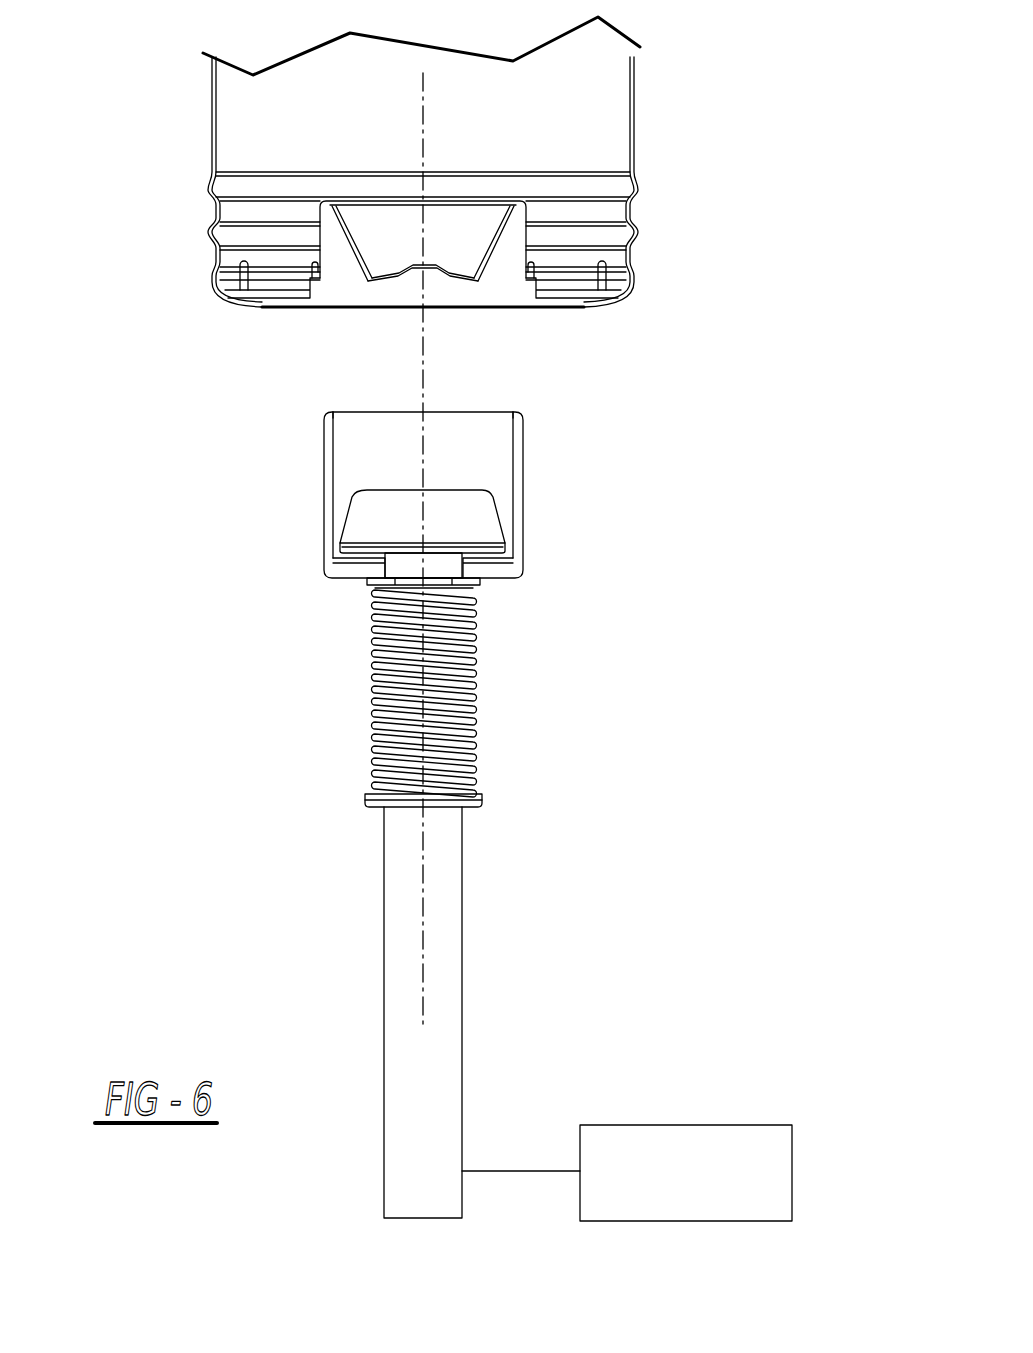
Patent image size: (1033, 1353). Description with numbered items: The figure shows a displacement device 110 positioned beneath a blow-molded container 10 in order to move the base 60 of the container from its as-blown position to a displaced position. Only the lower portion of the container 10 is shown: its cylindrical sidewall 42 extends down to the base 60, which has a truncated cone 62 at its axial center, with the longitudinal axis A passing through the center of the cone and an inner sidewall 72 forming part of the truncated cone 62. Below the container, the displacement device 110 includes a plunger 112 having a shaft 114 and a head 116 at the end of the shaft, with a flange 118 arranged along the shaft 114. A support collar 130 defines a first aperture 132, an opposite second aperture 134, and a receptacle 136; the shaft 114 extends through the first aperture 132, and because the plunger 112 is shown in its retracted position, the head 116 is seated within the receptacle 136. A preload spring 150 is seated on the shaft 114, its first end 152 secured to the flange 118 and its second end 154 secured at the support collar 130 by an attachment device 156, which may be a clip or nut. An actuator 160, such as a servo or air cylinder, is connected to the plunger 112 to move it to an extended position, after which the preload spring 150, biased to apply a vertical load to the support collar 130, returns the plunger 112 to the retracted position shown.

The container 10 is at (120, 118).
The cylindrical sidewall 42 is at (633, 122).
The base 60 is at (587, 317).
The truncated cone 62 is at (437, 276).
The inner sidewall 72 is at (492, 257).
The longitudinal axis A is at (500, 230).
The displacement device 110 is at (238, 635).
The plunger 112 is at (383, 880).
The shaft 114 is at (450, 563).
The head 116 is at (448, 512).
The flange 118 is at (482, 800).
The support collar 130 is at (523, 508).
The first aperture 132 is at (385, 568).
The second aperture 134 is at (353, 411).
The receptacle 136 is at (347, 484).
The preload spring 150 is at (472, 688).
The first end 152 is at (377, 780).
The second end 154 is at (470, 588).
The attachment device 156 is at (377, 582).
The actuator 160 is at (712, 1124).